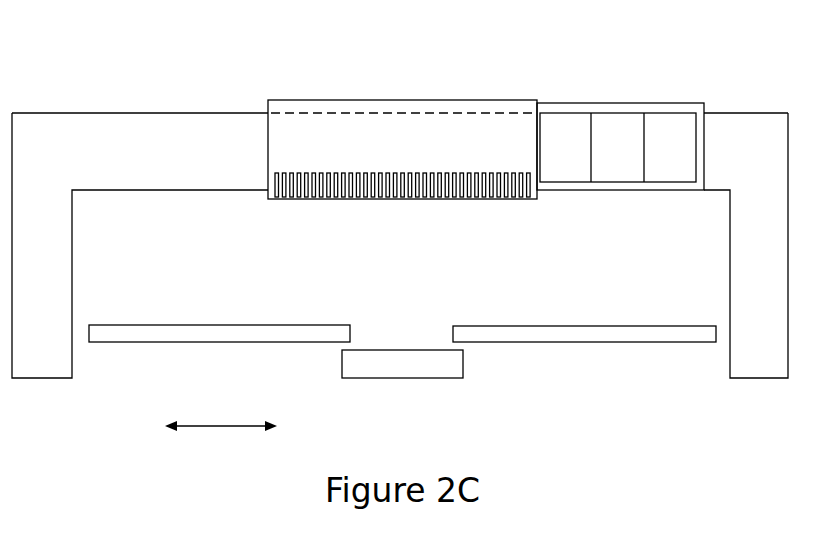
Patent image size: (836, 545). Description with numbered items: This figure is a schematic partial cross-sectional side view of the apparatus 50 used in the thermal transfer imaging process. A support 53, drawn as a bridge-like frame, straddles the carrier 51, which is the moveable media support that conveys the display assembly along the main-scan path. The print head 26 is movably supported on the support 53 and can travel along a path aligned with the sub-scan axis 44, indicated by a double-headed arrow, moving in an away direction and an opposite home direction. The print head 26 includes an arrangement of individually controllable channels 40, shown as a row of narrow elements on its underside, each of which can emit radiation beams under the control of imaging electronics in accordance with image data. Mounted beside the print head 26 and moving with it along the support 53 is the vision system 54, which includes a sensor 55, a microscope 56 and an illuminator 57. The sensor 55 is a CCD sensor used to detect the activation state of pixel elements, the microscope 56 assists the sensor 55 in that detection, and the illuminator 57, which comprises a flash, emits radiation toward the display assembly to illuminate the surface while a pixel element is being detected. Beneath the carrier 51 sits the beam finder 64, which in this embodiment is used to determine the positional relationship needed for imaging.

The print head 26 is at (340, 105).
The channels 40 is at (528, 168).
The sub-scan axis 44 is at (215, 427).
The apparatus 50 is at (616, 371).
The carrier 51 is at (237, 335).
The support 53 is at (152, 183).
The vision system 54 is at (613, 88).
The sensor 55 is at (564, 150).
The microscope 56 is at (617, 150).
The illuminator 57 is at (670, 150).
The beam finder 64 is at (440, 368).